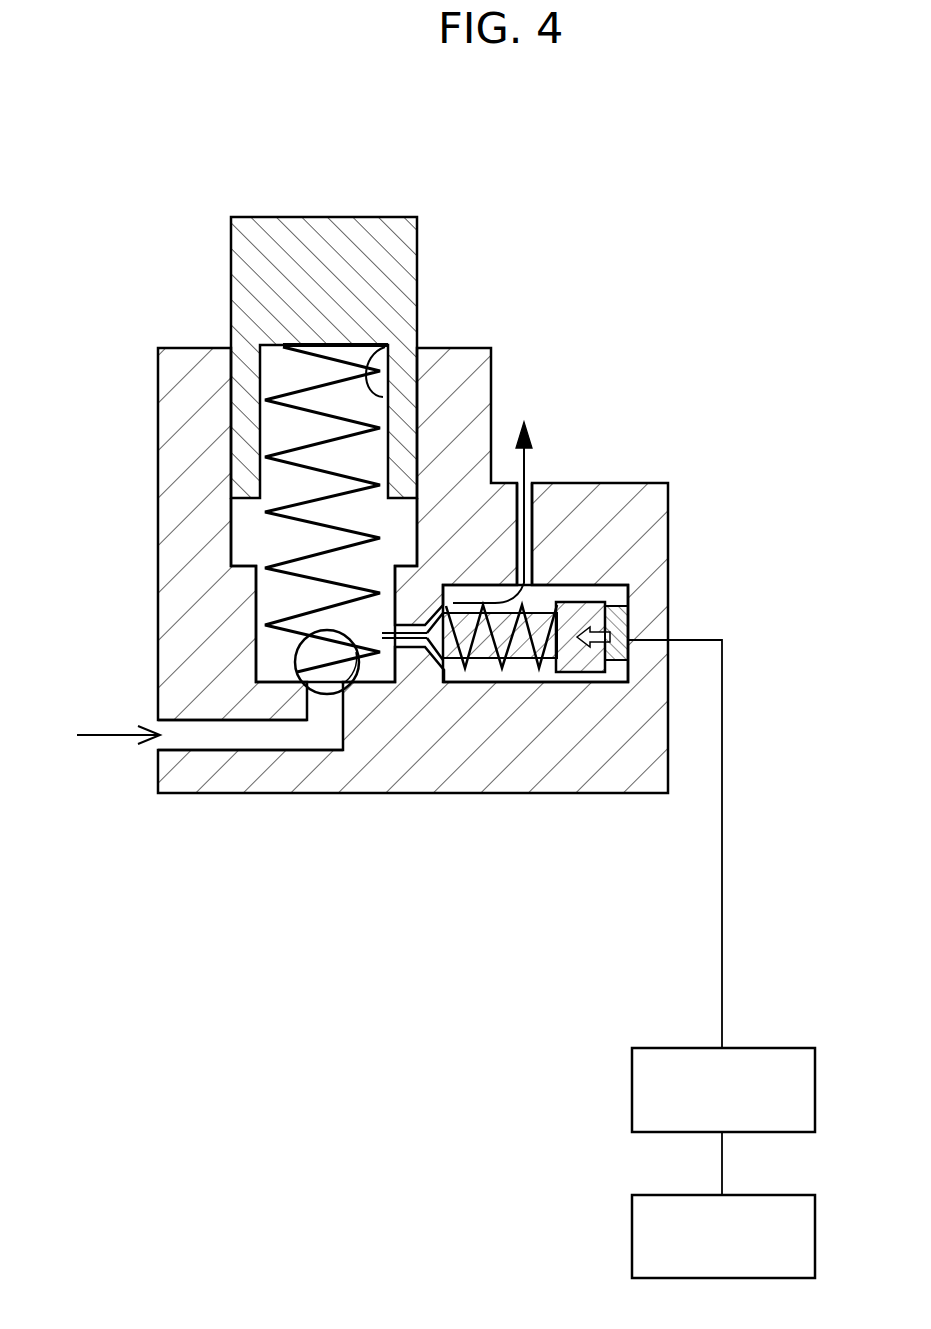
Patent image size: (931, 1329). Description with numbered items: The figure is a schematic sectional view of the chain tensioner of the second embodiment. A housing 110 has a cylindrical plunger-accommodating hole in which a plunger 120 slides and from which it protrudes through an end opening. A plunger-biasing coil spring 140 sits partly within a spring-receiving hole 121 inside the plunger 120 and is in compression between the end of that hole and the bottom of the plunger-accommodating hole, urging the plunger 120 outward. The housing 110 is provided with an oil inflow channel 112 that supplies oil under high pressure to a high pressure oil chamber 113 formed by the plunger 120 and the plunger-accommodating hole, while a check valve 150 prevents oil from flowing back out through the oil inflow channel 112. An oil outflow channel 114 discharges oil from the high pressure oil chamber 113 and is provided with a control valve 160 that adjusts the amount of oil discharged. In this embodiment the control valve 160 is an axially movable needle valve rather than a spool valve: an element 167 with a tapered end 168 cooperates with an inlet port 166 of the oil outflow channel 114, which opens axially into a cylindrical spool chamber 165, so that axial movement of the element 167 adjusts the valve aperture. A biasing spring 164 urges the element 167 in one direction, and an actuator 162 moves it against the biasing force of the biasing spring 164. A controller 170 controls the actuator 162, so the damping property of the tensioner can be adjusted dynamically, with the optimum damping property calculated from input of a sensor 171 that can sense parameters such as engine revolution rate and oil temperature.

The housing 110 is at (195, 407).
The oil inflow channel 112 is at (230, 737).
The high pressure oil chamber 113 is at (258, 541).
The oil outflow channel 114 is at (533, 519).
The plunger 120 is at (332, 233).
The spring-receiving hole 121 is at (373, 343).
The plunger-biasing coil spring 140 is at (310, 387).
The check valve 150 is at (305, 657).
The control valve 160 is at (692, 887).
The actuator 162 is at (583, 660).
The biasing spring 164 is at (523, 640).
The spool chamber 165 is at (490, 682).
The inlet port 166 is at (400, 640).
The element 167 is at (555, 607).
The tapered end 168 is at (427, 645).
The controller 170 is at (632, 1082).
The sensor 171 is at (632, 1232).